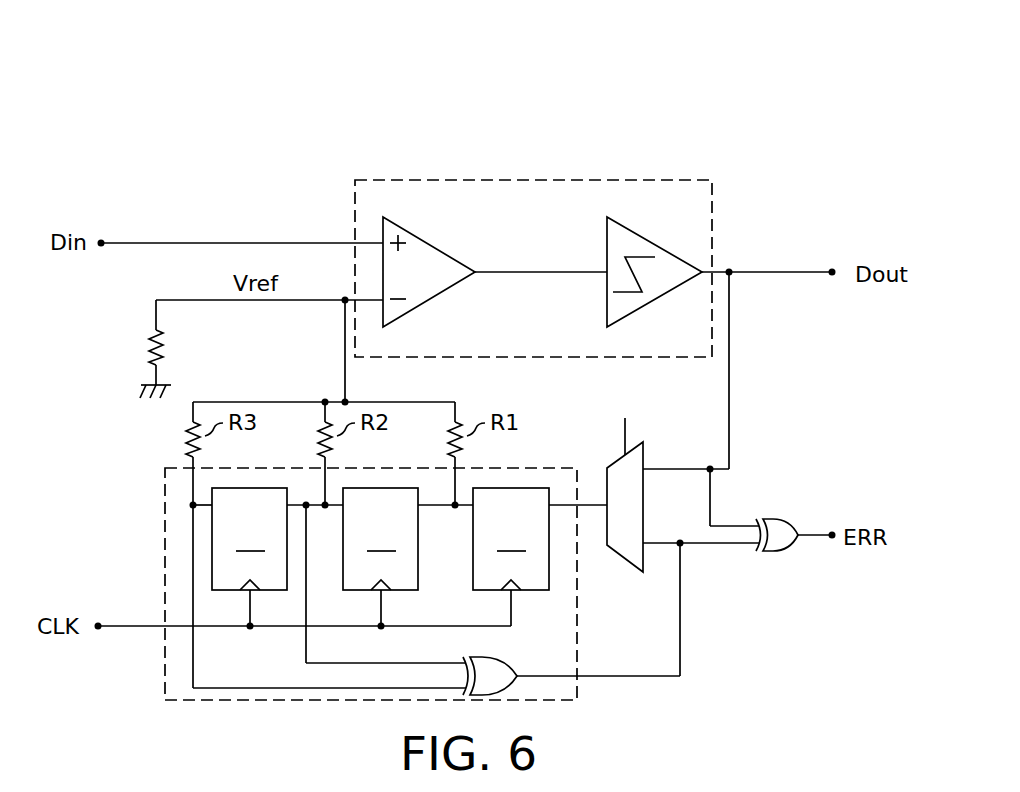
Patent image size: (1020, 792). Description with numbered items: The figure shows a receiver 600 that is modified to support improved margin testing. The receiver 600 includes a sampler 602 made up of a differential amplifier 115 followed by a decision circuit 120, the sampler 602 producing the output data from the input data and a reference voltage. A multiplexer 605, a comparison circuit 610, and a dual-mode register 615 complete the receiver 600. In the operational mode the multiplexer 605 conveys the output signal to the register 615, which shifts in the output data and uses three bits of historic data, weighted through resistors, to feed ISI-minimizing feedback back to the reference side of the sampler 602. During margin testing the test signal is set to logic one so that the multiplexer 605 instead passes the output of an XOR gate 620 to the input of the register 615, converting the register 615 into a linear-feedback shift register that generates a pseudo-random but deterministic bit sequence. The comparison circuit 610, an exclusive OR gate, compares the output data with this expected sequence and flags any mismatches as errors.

The receiver 600 is at (738, 78).
The sampler 602 is at (551, 343).
The differential amplifier 115 is at (437, 283).
The decision circuit 120 is at (635, 311).
The multiplexer 605 is at (622, 560).
The comparison circuit 610 is at (779, 520).
The dual-mode register 615 is at (165, 518).
The XOR gate 620 is at (497, 657).